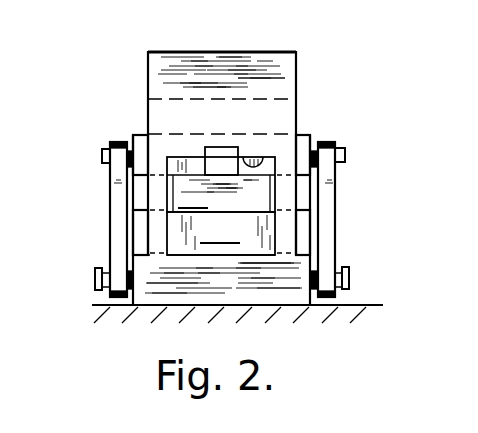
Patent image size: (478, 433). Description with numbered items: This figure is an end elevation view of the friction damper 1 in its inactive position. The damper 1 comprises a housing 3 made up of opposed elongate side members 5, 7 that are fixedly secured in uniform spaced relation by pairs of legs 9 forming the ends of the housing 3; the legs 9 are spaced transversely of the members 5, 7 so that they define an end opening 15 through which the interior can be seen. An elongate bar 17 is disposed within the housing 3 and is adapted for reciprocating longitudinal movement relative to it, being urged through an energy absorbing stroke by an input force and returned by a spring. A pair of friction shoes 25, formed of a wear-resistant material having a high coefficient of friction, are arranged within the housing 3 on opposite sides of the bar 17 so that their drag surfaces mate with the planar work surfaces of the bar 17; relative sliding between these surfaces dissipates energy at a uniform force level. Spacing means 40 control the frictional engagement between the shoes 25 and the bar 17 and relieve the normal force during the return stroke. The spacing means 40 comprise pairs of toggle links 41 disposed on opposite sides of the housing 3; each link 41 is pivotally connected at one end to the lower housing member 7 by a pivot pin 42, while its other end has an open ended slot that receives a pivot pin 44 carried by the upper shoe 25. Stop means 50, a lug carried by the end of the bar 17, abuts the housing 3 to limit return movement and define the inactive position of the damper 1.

The damper 1 is at (322, 79).
The housing 3 is at (300, 62).
The side member 5 is at (201, 53).
The side member 7 is at (287, 298).
The legs 9 is at (157, 206).
The end opening 15 is at (263, 161).
The bar 17 is at (221, 184).
The friction shoe 25 is at (142, 147).
The spacing means 40 is at (96, 236).
The link 41 is at (109, 220).
The pivot pin 42 is at (95, 277).
The pivot pin 44 is at (102, 155).
The stop means 50 is at (228, 148).